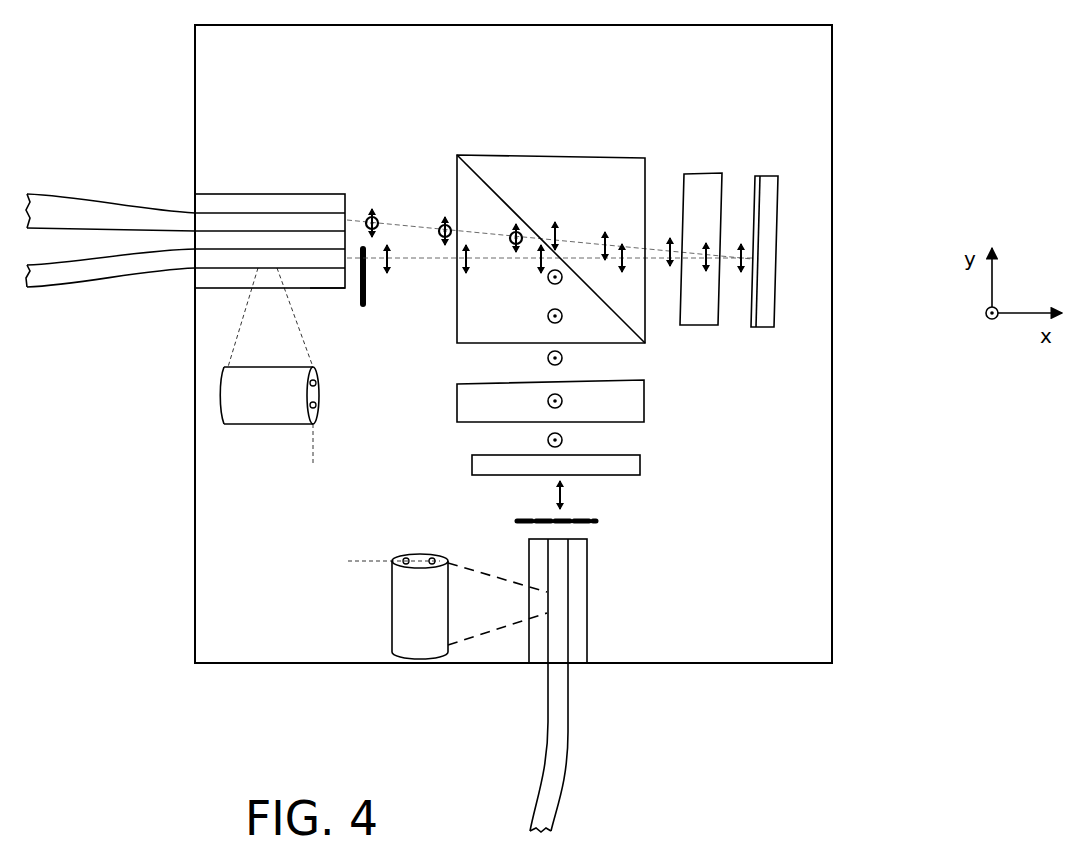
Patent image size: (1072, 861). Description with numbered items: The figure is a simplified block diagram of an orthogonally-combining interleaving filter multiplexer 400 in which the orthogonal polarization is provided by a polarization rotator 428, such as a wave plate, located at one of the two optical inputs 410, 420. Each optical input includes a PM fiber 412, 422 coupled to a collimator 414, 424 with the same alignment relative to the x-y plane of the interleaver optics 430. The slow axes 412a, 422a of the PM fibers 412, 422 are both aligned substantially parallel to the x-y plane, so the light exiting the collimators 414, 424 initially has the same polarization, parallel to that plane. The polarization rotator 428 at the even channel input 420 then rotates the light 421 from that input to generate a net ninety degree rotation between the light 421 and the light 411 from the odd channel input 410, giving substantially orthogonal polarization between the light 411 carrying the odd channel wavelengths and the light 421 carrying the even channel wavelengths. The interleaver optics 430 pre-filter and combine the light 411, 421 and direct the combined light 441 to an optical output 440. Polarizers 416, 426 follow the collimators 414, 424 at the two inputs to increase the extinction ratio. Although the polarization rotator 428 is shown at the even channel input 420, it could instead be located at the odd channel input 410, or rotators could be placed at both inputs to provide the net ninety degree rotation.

The orthogonally-combining interleaving filter multiplexer 400 is at (912, 90).
The optical input 410 is at (235, 310).
The light 411 is at (389, 275).
The PM fiber 412 is at (172, 268).
The slow axis 412a is at (316, 438).
The collimator 414 is at (325, 291).
The polarizer 416 is at (367, 307).
The optical input 420 is at (630, 557).
The light 421 is at (564, 440).
The PM fiber 422 is at (558, 701).
The slow axis 422a is at (360, 558).
The collimator 424 is at (588, 605).
The polarizer 426 is at (516, 521).
The polarization rotator 428 is at (640, 465).
The interleaver optics 430 is at (690, 114).
The optical output 440 is at (250, 175).
The combined light 441 is at (372, 208).